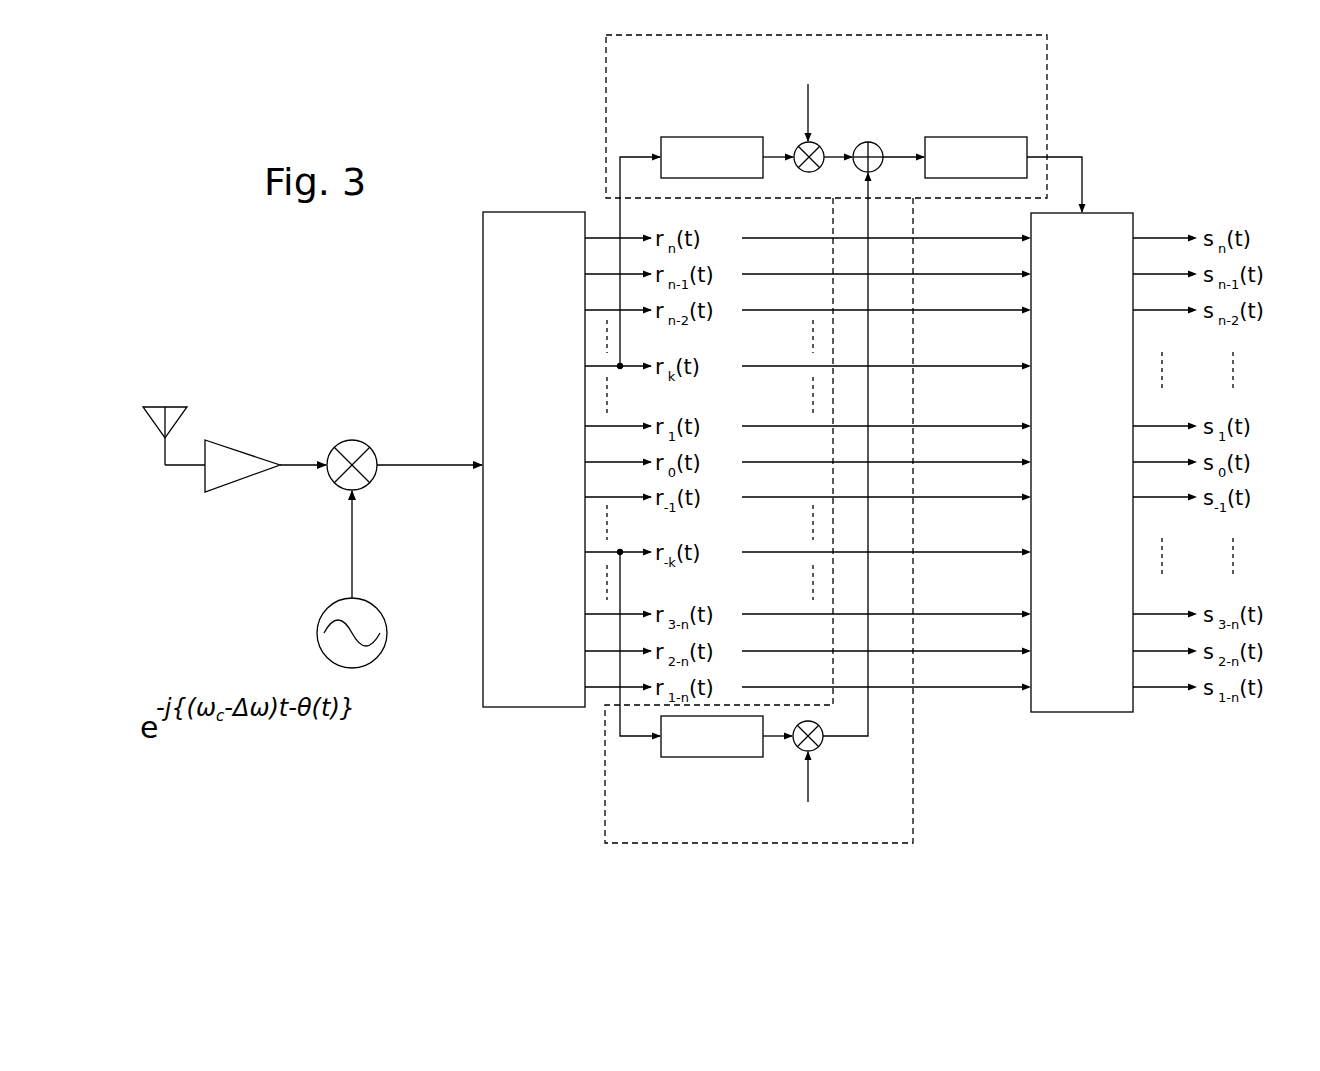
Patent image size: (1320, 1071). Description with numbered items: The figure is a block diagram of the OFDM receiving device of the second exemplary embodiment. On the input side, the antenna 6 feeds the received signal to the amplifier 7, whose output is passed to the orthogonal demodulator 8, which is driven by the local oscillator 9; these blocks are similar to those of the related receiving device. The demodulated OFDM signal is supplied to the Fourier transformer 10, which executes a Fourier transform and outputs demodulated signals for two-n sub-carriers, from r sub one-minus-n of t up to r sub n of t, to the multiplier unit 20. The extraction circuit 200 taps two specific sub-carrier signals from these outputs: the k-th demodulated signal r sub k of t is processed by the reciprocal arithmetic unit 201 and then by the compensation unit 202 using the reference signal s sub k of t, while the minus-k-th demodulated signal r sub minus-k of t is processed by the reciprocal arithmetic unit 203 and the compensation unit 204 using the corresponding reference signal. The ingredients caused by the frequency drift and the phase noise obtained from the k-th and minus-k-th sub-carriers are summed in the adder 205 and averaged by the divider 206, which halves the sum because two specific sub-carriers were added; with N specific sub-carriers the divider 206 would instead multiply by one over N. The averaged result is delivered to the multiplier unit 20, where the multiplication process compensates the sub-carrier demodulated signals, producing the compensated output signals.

The antenna 6 is at (179, 405).
The amplifier 7 is at (241, 450).
The orthogonal demodulator 8 is at (359, 442).
The local oscillator 9 is at (377, 606).
The Fourier transformer 10 is at (533, 212).
The multiplier unit 20 is at (1106, 212).
The extraction circuit 200 is at (1047, 88).
The reciprocal arithmetic unit 201 is at (715, 136).
The compensation unit 202 is at (824, 148).
The reciprocal arithmetic unit 203 is at (735, 758).
The compensation unit 204 is at (822, 745).
The adder 205 is at (884, 147).
The divider 206 is at (978, 136).